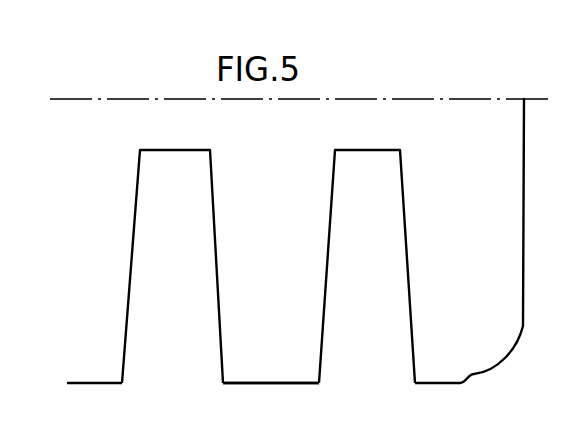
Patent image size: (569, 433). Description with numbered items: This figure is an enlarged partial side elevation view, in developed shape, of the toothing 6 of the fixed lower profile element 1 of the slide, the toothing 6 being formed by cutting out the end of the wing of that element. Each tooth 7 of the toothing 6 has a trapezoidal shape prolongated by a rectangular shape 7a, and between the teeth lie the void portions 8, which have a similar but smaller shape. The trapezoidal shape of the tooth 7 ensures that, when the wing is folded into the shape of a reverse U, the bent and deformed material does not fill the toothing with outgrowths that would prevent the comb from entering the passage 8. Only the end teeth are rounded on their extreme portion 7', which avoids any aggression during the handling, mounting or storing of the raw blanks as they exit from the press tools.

The fixed lower profile element 1 is at (373, 123).
The toothing 6 is at (180, 306).
The tooth 7 is at (270, 290).
The rectangular shape 7a is at (271, 280).
The extreme portion 7' is at (510, 241).
The void portions 8 is at (373, 247).